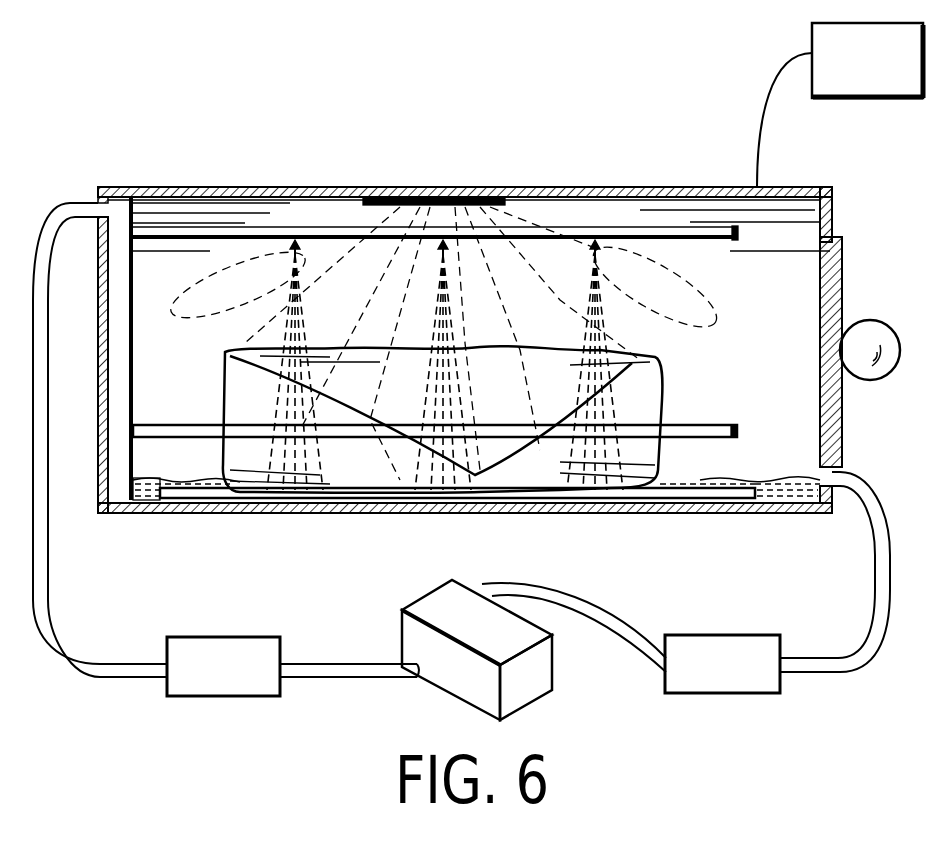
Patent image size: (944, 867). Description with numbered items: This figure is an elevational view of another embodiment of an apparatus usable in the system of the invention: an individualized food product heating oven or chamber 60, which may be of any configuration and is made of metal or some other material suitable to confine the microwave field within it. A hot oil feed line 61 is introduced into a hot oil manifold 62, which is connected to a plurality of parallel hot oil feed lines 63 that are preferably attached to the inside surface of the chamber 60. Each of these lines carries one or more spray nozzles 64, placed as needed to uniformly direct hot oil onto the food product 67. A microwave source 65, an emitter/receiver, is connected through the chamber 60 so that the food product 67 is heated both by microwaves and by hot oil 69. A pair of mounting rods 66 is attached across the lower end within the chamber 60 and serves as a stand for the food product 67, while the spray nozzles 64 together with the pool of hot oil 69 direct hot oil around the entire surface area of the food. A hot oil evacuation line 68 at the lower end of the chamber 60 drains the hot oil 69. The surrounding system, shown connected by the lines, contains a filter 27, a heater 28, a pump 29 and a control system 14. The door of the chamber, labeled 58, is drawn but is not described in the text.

The control system 14 is at (840, 105).
The filter 27 is at (722, 664).
The heater 28 is at (465, 669).
The pump 29 is at (293, 666).
The door 58 is at (840, 292).
The chamber 60 is at (600, 188).
The hot oil feed line 61 is at (62, 218).
The hot oil manifold 62 is at (122, 487).
The parallel hot oil feed lines 63 is at (258, 232).
The spray nozzles 64 is at (295, 238).
The microwave source 65 is at (425, 202).
The mounting rods 66 is at (213, 493).
The food product 67 is at (548, 407).
The hot oil evacuation line 68 is at (865, 485).
The hot oil 69 is at (140, 514).